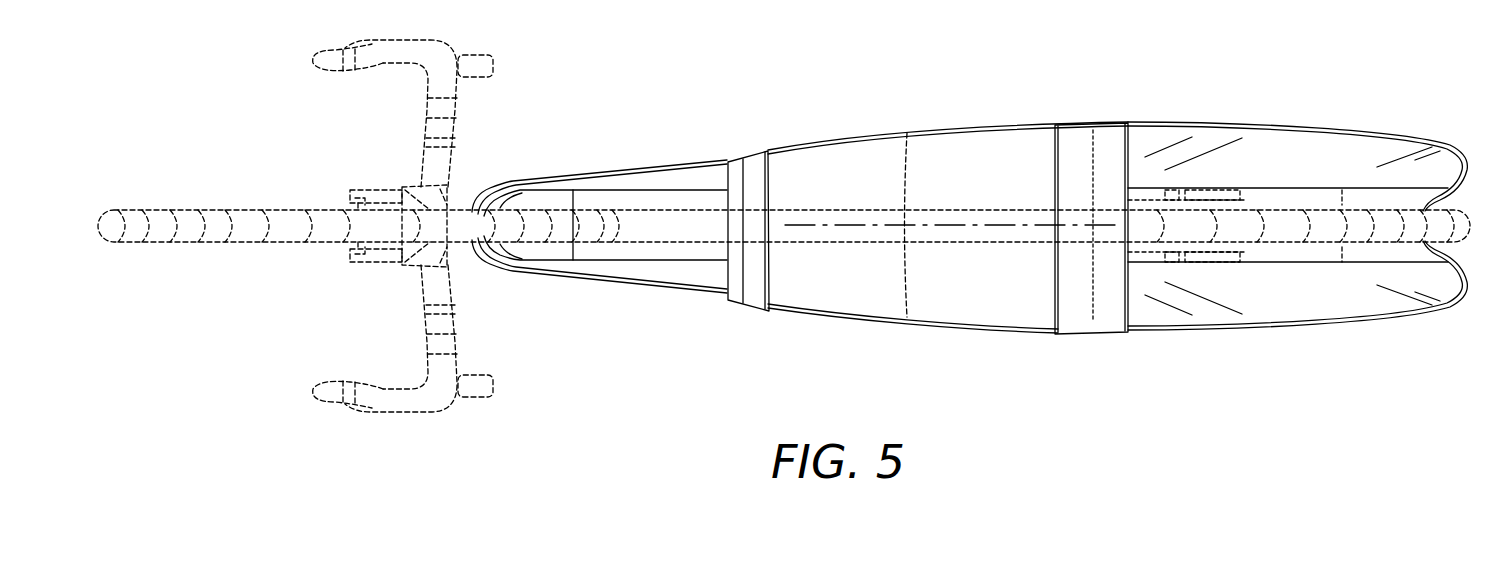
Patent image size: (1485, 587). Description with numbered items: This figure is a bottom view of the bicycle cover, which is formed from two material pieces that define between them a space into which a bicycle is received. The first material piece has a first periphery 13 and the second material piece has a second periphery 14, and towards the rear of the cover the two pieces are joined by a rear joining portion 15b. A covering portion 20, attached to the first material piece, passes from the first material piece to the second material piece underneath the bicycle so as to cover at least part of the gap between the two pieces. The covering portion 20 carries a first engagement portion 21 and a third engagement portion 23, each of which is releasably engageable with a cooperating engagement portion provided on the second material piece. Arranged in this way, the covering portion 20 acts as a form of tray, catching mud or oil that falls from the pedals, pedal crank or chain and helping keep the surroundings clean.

The first periphery 13 is at (667, 161).
The second periphery 14 is at (682, 288).
The covering portion 20 is at (963, 312).
The first engagement portion 21 is at (762, 313).
The third engagement portion 23 is at (1120, 337).
The rear joining portion 15b is at (1387, 197).